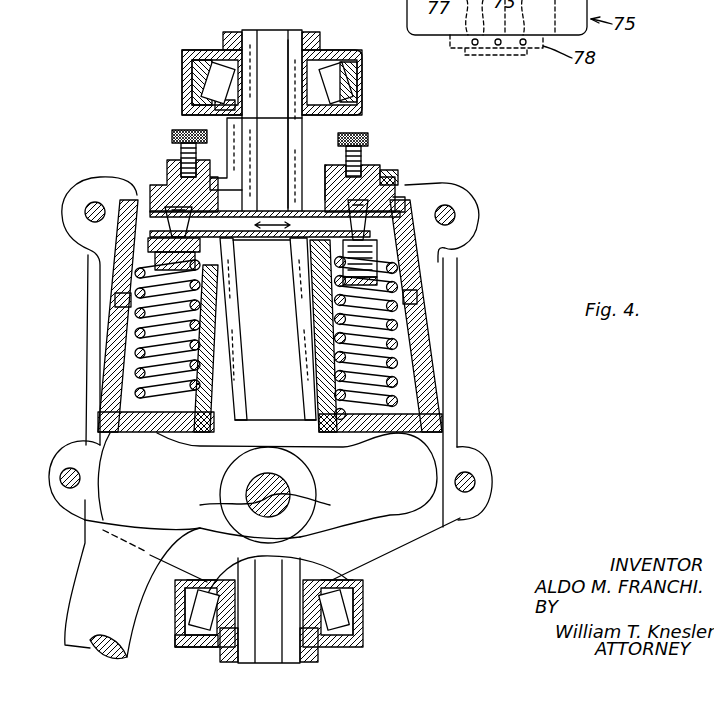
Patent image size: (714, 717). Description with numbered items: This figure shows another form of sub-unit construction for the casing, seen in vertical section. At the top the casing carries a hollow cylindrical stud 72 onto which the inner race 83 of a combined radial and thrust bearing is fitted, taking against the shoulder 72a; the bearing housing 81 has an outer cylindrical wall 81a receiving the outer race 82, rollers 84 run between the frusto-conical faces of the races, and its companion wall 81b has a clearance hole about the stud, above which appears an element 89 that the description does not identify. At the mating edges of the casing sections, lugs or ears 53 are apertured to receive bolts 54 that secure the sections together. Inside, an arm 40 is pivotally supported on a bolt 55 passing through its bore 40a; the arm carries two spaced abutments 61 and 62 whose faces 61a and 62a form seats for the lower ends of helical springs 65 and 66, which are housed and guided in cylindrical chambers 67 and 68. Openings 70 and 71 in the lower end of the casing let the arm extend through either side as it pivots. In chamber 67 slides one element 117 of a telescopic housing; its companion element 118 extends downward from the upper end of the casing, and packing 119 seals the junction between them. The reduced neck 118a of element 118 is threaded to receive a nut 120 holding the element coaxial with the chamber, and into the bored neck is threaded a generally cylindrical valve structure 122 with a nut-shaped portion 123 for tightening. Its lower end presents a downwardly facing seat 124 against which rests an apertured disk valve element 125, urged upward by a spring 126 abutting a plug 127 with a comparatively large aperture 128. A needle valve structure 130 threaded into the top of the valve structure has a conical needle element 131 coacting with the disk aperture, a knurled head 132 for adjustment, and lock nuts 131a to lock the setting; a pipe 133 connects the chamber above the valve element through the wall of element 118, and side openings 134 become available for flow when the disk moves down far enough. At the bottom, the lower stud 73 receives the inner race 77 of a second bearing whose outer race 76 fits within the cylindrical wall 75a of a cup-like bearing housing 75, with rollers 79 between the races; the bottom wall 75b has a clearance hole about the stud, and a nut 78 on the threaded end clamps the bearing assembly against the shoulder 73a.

The upper cylindrical stud 72 is at (272, 30).
The inner race 83 is at (287, 103).
The nuts 89 is at (224, 33).
The bearing housing 81 is at (333, 58).
The companion wall of bearing housing 81b is at (193, 58).
The rollers 84 is at (215, 76).
The outer cylindrical wall of bearing housing 81a is at (345, 95).
The outer race 82 is at (212, 78).
The shoulder of upper stud 72a is at (236, 120).
The needle valve structure 130 is at (170, 134).
The lock nuts 131a is at (182, 158).
The knurled head 132 is at (362, 138).
The companion housing element 118 is at (168, 174).
The nut 120 is at (242, 182).
The valve structure 122 is at (398, 170).
The nut-shaped portion 123 is at (372, 160).
The needle element 131 is at (175, 218).
The annular seat 124 is at (196, 226).
The cylindrical chamber 68 is at (100, 241).
The helical spring 66 is at (135, 331).
The helical spring 65 is at (415, 268).
The telescopic housing element 117 is at (412, 333).
The valve spring 126 is at (170, 250).
The plug aperture 128 is at (180, 260).
The packing 119 is at (118, 298).
The pipe 133 is at (268, 240).
The side openings 134 is at (330, 256).
The plug 127 is at (323, 296).
The lugs or ears 53 is at (78, 185).
The bolts or screws 54 is at (84, 208).
The valve element 125 is at (456, 212).
The neck portion 118a is at (425, 190).
The cylindrical chamber 67 is at (457, 240).
The abutment face 61a is at (443, 433).
The abutment 61 is at (368, 485).
The abutment 62 is at (192, 486).
The abutment face 62a is at (150, 432).
The pivot bolt 55 is at (220, 500).
The bore of arm 40a is at (318, 501).
The casing opening 71 is at (85, 543).
The arm 40 is at (66, 618).
The casing opening 70 is at (417, 533).
The lower cylindrical stud 73 is at (290, 596).
The shoulder of lower stud 73a is at (333, 582).
The cup-like bearing housing 75 is at (365, 630).
The rollers 79 is at (203, 610).
The outer race 76 is at (185, 598).
The inner race 77 is at (212, 581).
The cylindrical wall of bearing housing 75a is at (360, 595).
The nut 78 is at (320, 648).
The bottom wall of bearing housing 75b is at (200, 643).